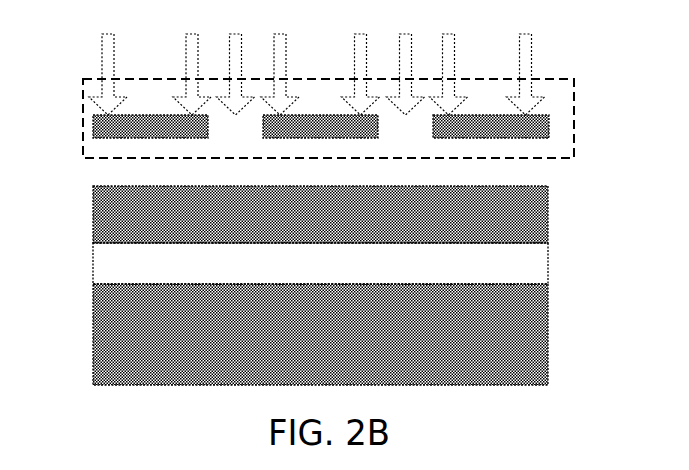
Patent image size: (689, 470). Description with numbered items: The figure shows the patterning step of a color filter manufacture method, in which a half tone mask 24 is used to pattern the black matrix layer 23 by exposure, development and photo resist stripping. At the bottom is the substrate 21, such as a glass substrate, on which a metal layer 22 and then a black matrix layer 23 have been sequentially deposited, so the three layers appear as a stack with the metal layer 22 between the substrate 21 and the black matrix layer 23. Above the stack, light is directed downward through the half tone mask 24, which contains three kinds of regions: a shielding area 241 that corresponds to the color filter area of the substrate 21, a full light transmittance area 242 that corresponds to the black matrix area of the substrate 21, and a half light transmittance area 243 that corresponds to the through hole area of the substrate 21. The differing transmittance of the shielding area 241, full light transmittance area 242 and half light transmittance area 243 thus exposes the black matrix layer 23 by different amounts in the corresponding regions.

The substrate 21 is at (542, 340).
The metal layer 22 is at (543, 270).
The black matrix layer 23 is at (542, 218).
The half tone mask 24 is at (563, 125).
The shielding area 241 is at (530, 132).
The full light transmittance area 242 is at (233, 131).
The half light transmittance area 243 is at (317, 130).